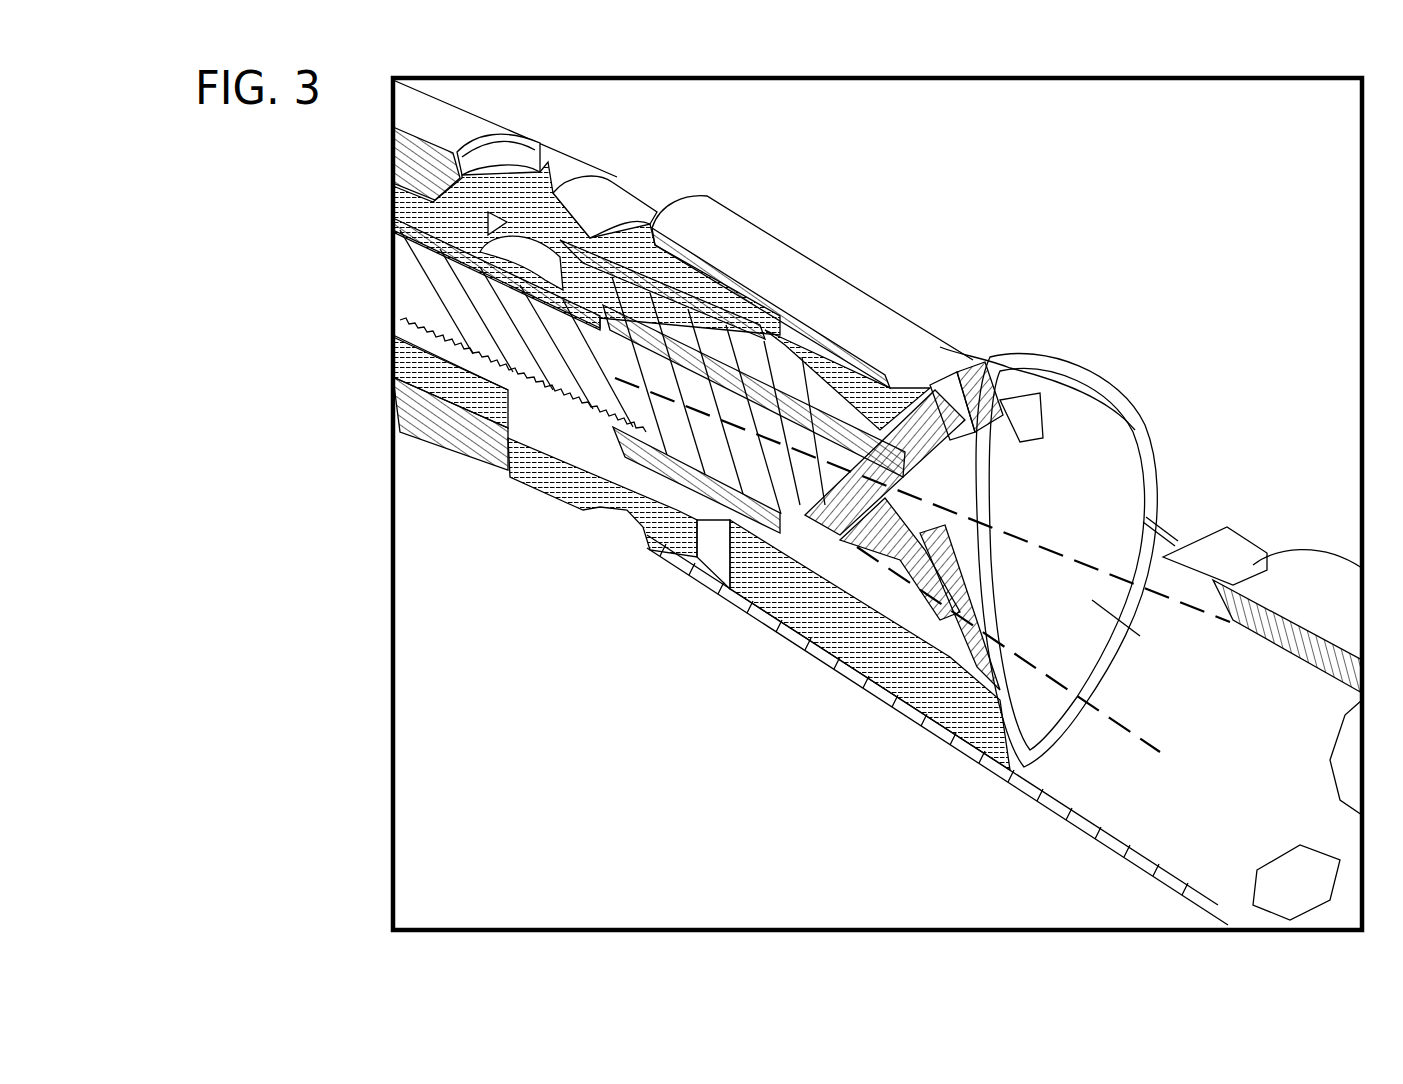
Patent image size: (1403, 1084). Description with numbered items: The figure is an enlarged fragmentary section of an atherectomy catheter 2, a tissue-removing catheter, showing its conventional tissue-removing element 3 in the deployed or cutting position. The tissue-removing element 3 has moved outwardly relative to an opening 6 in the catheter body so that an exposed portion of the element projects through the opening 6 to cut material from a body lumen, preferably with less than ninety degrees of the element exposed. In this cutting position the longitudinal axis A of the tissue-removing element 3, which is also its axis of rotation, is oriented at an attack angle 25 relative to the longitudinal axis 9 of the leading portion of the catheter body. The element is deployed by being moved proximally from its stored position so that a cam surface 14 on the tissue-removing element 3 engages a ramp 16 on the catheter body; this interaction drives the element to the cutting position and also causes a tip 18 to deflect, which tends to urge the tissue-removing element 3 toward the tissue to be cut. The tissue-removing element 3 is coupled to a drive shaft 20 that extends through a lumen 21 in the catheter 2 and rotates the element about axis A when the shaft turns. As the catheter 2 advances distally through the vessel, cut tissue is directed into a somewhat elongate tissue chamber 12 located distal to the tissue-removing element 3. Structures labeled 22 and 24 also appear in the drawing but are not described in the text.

The atherectomy catheter 2 is at (1200, 294).
The tissue-removing element 3 is at (1012, 370).
The opening 6 is at (1175, 532).
The longitudinal axis of a leading portion of the catheter body 9 is at (885, 563).
The tissue chamber 12 is at (1160, 832).
The cam surface 14 is at (950, 602).
The ramp 16 is at (1000, 727).
The tip 18 is at (1322, 570).
The drive shaft 20 is at (590, 378).
The lumen 21 is at (448, 426).
The hoop 22 is at (1132, 450).
The hoop inner surface 24 is at (1130, 624).
The attack angle 25 is at (693, 510).
The longitudinal axis of the tissue-removing element A is at (893, 457).